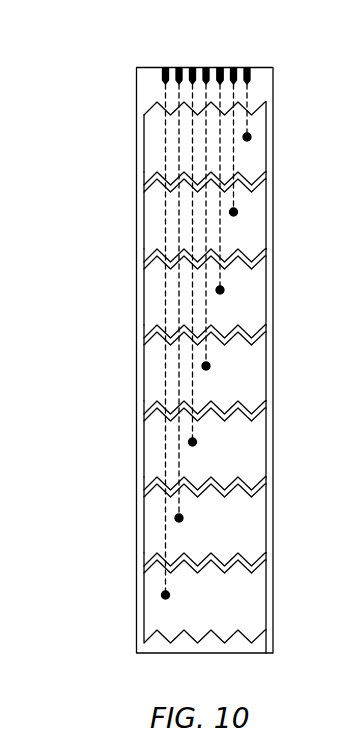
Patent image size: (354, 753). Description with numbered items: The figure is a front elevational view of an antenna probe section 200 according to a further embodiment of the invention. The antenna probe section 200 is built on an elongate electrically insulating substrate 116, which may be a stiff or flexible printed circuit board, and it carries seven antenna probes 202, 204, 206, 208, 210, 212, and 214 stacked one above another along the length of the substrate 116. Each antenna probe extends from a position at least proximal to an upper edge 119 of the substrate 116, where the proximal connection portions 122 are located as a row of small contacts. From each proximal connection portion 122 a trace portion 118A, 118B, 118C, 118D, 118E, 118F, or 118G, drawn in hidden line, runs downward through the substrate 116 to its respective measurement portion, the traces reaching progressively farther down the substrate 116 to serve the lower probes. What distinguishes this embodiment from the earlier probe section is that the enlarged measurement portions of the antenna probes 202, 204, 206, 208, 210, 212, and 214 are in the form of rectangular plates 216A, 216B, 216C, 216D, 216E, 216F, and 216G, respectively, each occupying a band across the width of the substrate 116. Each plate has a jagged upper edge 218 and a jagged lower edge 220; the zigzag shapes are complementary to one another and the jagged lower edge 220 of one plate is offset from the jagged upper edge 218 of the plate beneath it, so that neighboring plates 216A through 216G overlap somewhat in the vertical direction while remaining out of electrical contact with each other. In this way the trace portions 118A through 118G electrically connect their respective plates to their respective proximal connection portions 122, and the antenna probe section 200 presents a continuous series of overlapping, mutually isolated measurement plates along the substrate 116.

The antenna probe section 200 is at (181, 356).
The elongate electrically insulating substrate 116 is at (266, 653).
The proximal connection portion 122 is at (205, 68).
The upper edge 119 is at (221, 68).
The trace portion 118A is at (166, 583).
The trace portion 118B is at (179, 506).
The trace portion 118C is at (192, 430).
The trace portion 118D is at (206, 354).
The trace portion 118E is at (220, 278).
The trace portion 118F is at (234, 200).
The trace portion 118G is at (247, 96).
The antenna probe 202 is at (266, 615).
The antenna probe 204 is at (266, 539).
The antenna probe 206 is at (266, 462).
The antenna probe 208 is at (266, 387).
The antenna probe 210 is at (266, 310).
The antenna probe 212 is at (266, 234).
The antenna probe 214 is at (266, 157).
The rectangular plate 216A is at (145, 623).
The rectangular plate 216B is at (145, 547).
The rectangular plate 216C is at (145, 470).
The rectangular plate 216D is at (145, 395).
The rectangular plate 216E is at (145, 318).
The rectangular plate 216F is at (145, 242).
The rectangular plate 216G is at (145, 167).
The jagged upper edge 218 is at (147, 195).
The jagged lower edge 220 is at (144, 186).